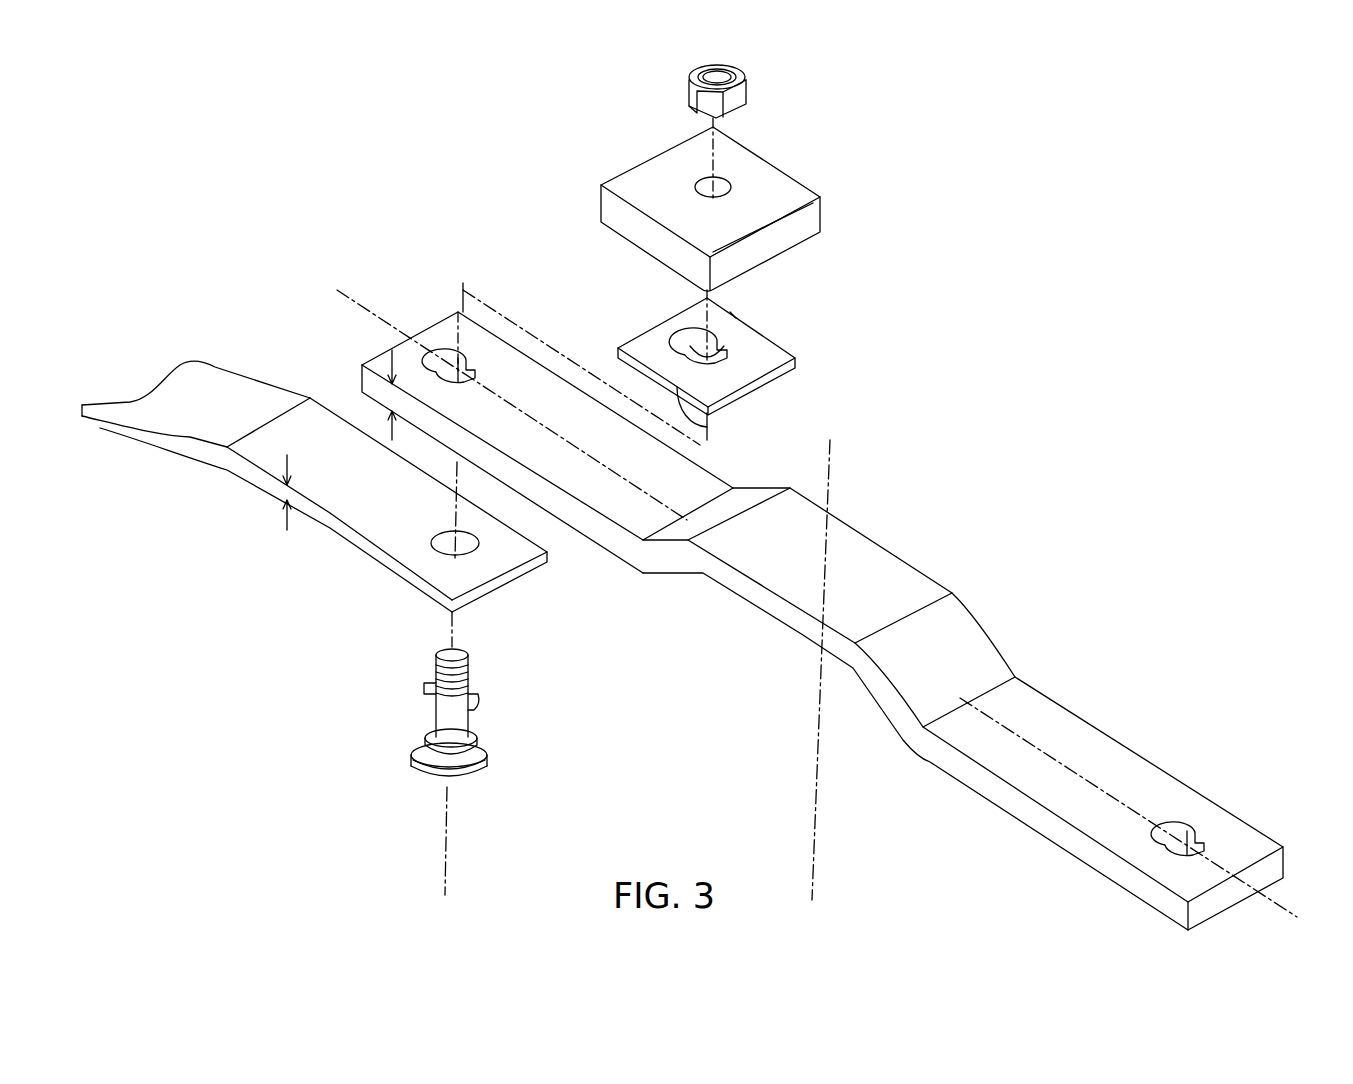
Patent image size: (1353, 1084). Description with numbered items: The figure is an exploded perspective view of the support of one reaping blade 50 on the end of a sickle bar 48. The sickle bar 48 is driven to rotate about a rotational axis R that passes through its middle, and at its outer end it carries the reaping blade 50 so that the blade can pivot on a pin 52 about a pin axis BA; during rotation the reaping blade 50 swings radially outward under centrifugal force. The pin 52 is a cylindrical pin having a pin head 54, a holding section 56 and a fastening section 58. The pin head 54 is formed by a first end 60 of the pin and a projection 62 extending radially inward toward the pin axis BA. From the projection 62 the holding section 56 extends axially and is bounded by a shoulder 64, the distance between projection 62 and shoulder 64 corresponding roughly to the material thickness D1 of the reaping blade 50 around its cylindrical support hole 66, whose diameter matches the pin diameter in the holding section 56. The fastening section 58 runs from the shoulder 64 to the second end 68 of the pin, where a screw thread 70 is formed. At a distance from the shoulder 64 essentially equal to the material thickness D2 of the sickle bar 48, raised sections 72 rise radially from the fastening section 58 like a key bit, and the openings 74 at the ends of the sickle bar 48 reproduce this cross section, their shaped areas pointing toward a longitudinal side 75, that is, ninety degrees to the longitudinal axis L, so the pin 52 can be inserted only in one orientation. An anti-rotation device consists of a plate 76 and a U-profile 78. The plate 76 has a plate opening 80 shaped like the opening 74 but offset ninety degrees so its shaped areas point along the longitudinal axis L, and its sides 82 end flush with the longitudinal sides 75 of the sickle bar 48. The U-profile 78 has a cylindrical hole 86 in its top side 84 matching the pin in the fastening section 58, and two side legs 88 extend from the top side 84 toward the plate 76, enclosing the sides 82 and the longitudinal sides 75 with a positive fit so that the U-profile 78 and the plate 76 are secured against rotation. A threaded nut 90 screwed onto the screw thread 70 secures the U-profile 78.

The sickle bar 48 is at (885, 590).
The reaping blade 50 is at (328, 497).
The pin 52 is at (446, 730).
The pin head 54 is at (446, 789).
The holding section 56 is at (438, 747).
The fastening section 58 is at (445, 720).
The first end 60 is at (463, 777).
The projection 62 is at (440, 767).
The shoulder 64 is at (480, 735).
The support hole 66 is at (480, 541).
The second end 68 is at (450, 655).
The screw thread 70 is at (468, 652).
The raised sections 72 is at (427, 683).
The openings 74 is at (458, 355).
The longitudinal side 75 is at (538, 365).
The plate 76 is at (747, 365).
The U-profile 78 is at (637, 183).
The plate opening 80 is at (730, 362).
The sides 82 is at (732, 312).
The top side 84 is at (707, 195).
The cylindrical hole 86 is at (708, 178).
The side legs 88 is at (623, 215).
The threaded nut 90 is at (745, 100).
The material thickness of the reaping blade D1 is at (287, 530).
The material thickness of the sickle bar D2 is at (380, 352).
The longitudinal axis L is at (1287, 907).
The rotational axis R is at (817, 800).
The pin axis BA is at (448, 833).